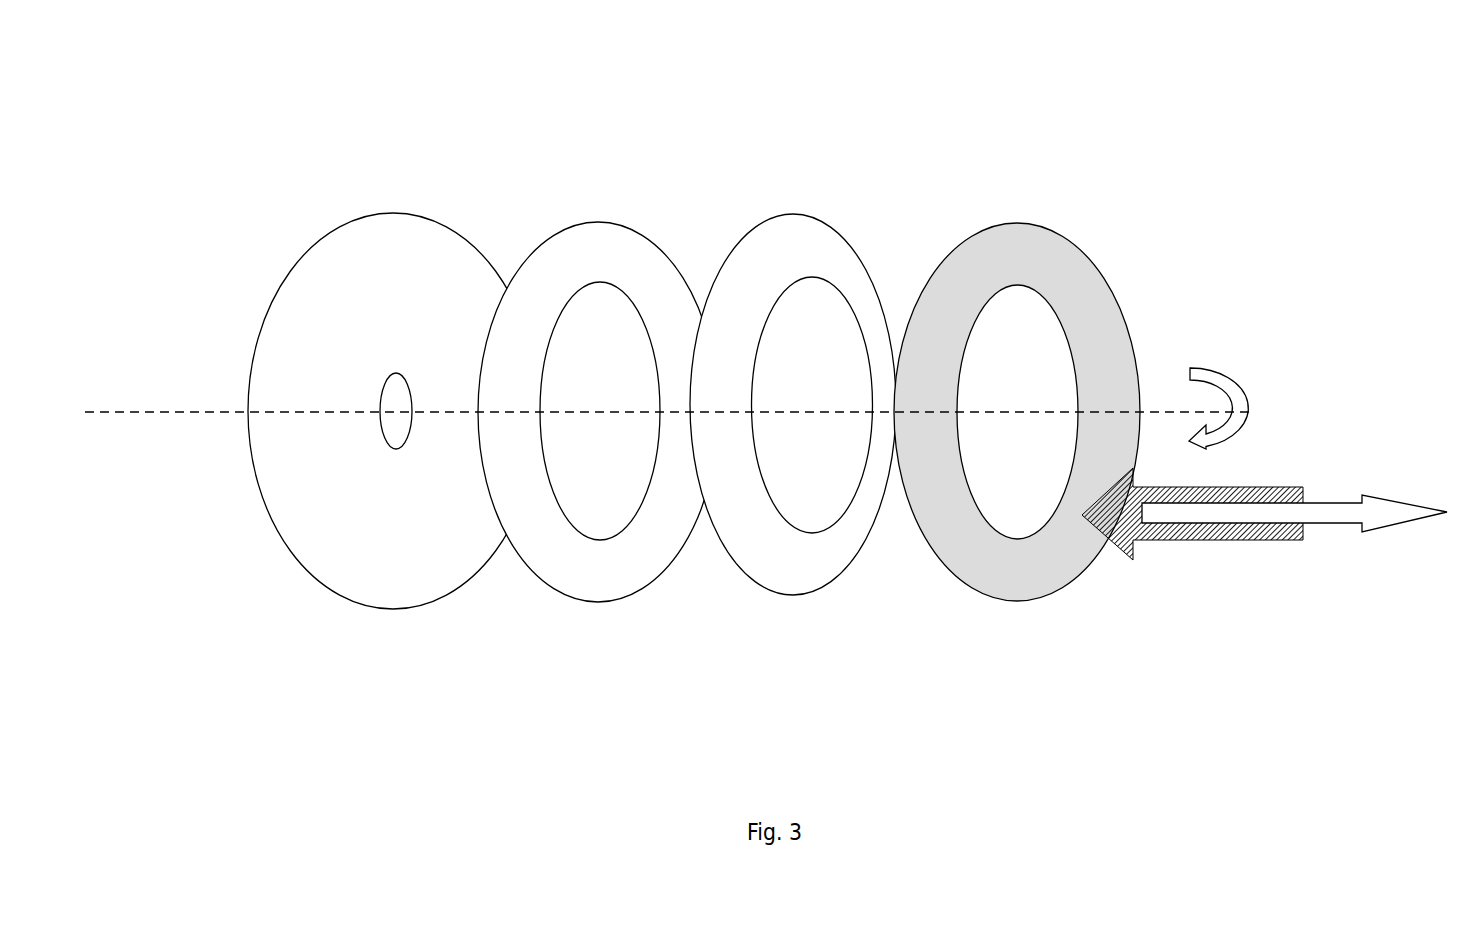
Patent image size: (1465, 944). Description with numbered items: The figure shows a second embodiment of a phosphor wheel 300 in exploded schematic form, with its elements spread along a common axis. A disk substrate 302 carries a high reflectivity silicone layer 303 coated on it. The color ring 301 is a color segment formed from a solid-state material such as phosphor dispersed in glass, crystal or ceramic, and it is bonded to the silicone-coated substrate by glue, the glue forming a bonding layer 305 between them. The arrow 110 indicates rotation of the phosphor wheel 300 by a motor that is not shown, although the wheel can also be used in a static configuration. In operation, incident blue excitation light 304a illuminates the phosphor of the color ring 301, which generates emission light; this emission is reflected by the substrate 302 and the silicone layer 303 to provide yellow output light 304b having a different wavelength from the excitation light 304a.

The phosphor wheel 300 is at (420, 147).
The color ring 301 is at (1027, 263).
The substrate 302 is at (363, 565).
The silicone layer 303 is at (561, 266).
The bonding layer 305 is at (845, 567).
The excitation light 304a is at (1117, 513).
The output light 304b is at (1390, 510).
The arrow 110 is at (1232, 372).